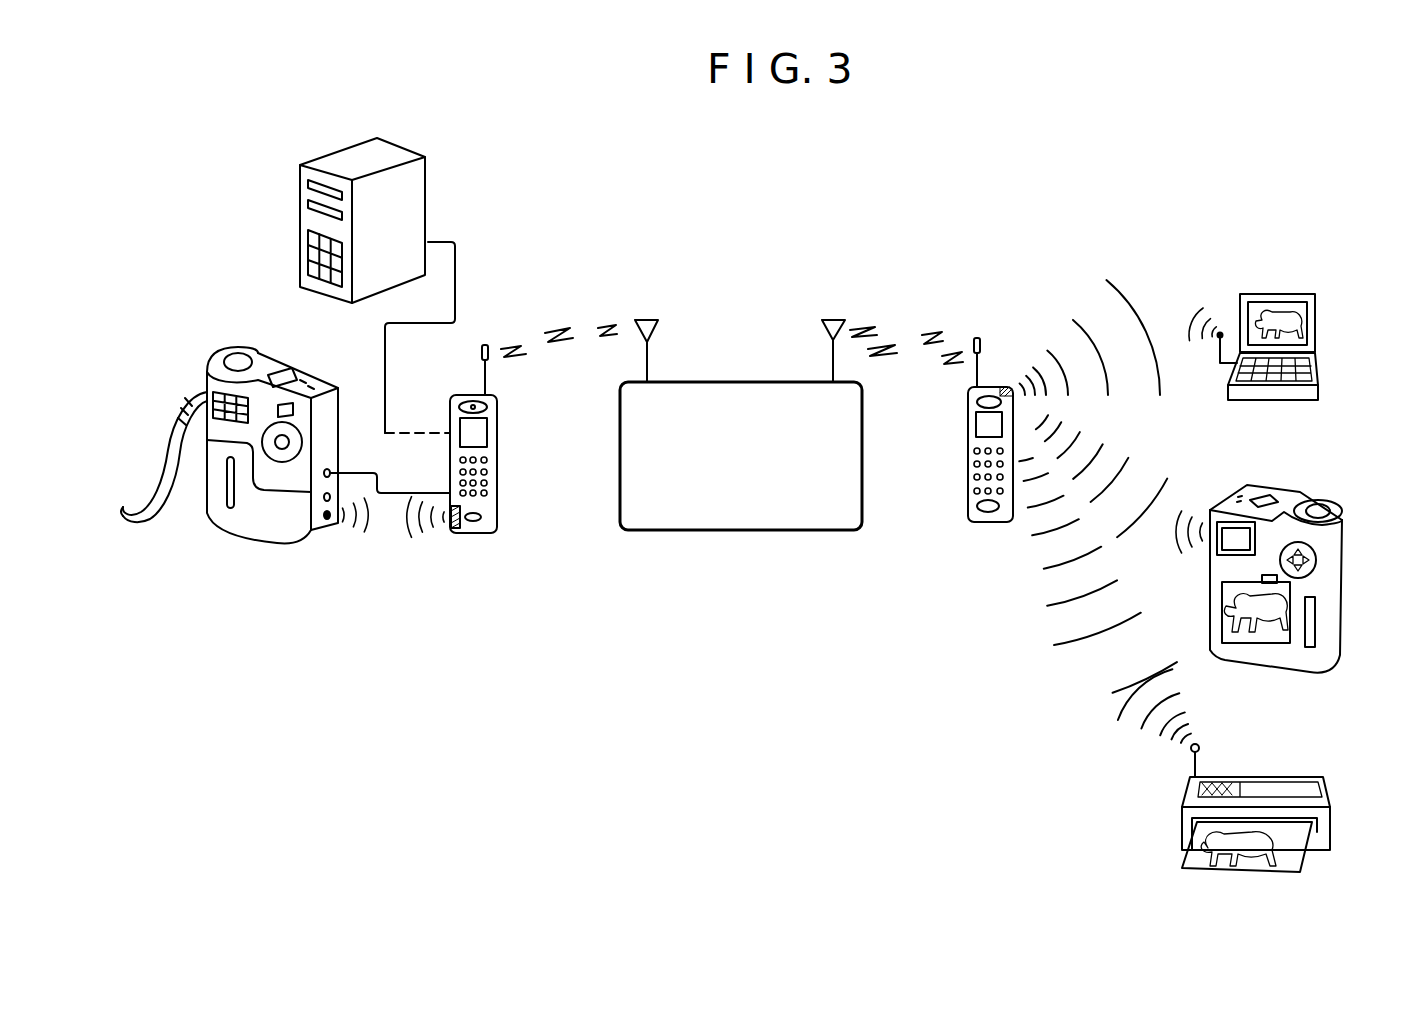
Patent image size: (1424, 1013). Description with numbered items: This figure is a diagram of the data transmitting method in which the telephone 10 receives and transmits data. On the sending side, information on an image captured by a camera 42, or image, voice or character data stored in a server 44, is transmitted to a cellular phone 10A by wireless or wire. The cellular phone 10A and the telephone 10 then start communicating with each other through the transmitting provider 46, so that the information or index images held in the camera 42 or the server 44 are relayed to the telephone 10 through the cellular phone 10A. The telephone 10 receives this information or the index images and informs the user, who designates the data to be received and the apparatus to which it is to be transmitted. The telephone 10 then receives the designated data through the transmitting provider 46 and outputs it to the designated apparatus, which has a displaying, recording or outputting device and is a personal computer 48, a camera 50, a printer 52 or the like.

The telephone 10 is at (999, 517).
The cellular phone 10A is at (483, 522).
The camera 42 is at (277, 523).
The server 44 is at (412, 203).
The transmitting provider 46 is at (837, 530).
The personal computer 48 is at (1305, 328).
The camera 50 is at (1332, 595).
The printer 52 is at (1278, 777).